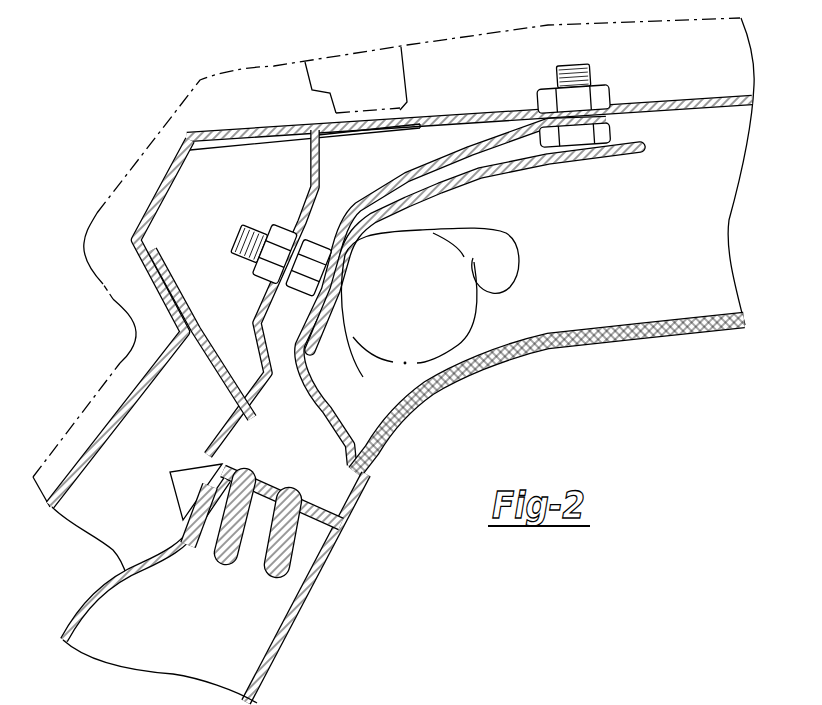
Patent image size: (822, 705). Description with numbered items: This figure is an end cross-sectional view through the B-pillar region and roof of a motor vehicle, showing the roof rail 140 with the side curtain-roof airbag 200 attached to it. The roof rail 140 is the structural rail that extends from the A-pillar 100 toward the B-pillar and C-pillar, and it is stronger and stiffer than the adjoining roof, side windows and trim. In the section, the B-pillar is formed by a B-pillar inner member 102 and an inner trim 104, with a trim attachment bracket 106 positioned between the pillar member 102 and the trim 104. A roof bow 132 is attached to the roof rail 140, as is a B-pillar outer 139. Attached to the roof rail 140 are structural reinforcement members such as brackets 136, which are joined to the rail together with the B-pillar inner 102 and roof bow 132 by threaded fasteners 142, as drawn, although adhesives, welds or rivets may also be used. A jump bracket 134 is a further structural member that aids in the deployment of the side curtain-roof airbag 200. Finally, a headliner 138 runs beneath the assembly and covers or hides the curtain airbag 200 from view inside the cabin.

The A-pillar 100 is at (300, 662).
The B-pillar inner member 102 is at (80, 605).
The inner trim 104 is at (298, 622).
The trim attachment bracket 106 is at (222, 561).
The roof bow 132 is at (668, 100).
The jump bracket 134 is at (589, 165).
The brackets 136 is at (405, 175).
The headliner 138 is at (686, 332).
The B-pillar outer 139 is at (130, 397).
The roof rail 140 is at (116, 164).
The fasteners 142 is at (556, 78).
The side curtain-roof airbag 200 is at (527, 268).